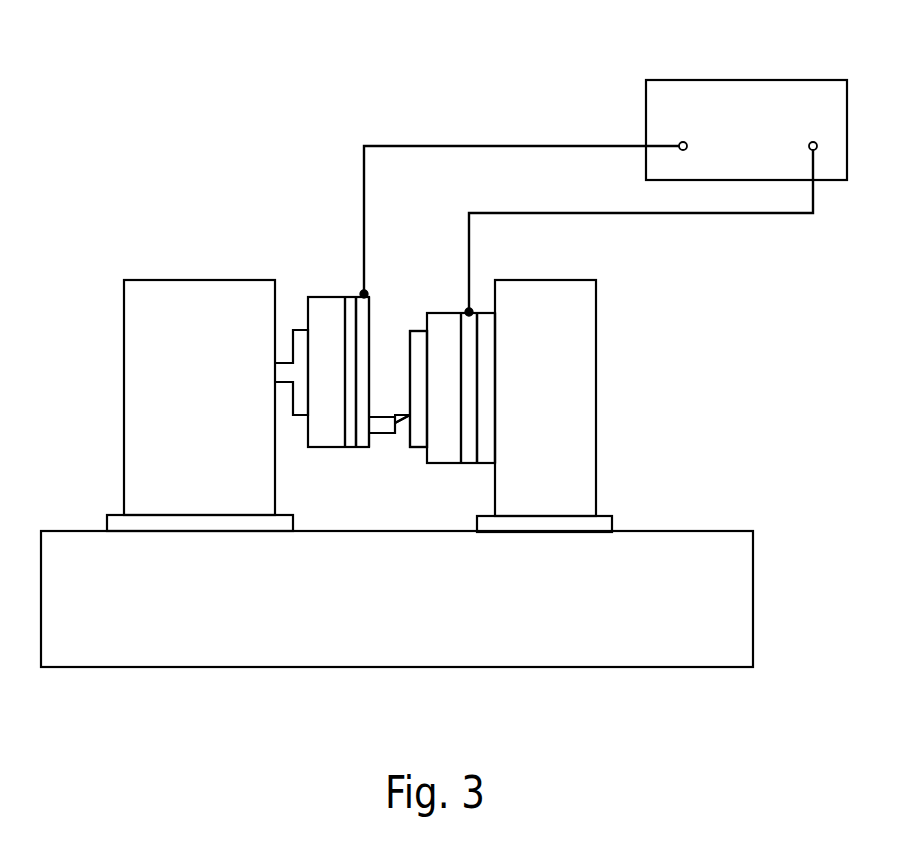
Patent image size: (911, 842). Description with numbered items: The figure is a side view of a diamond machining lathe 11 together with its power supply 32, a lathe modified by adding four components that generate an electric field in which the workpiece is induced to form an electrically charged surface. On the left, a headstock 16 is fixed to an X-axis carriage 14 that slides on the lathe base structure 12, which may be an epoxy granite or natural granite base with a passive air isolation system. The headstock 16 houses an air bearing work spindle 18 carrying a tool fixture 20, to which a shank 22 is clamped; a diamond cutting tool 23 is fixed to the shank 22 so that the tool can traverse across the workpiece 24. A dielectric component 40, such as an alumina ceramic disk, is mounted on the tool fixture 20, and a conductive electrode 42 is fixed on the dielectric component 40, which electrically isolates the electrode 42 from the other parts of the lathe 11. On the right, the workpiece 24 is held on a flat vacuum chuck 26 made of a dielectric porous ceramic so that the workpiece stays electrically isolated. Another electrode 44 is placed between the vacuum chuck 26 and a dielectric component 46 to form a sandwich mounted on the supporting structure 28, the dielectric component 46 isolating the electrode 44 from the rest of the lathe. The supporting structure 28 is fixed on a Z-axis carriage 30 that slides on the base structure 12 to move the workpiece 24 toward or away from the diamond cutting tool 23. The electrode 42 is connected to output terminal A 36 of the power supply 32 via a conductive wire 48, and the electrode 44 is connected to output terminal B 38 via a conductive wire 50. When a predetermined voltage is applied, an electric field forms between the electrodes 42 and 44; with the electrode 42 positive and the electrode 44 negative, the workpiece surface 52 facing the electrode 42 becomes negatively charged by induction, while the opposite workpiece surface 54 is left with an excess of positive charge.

The diamond machining lathe 11 is at (112, 241).
The lathe base structure 12 is at (92, 632).
The X-axis carriage 14 is at (133, 523).
The headstock 16 is at (159, 382).
The air bearing work spindle 18 is at (302, 343).
The tool fixture 20 is at (325, 313).
The shank 22 is at (382, 427).
The diamond cutting tool 23 is at (400, 423).
The workpiece 24 is at (418, 435).
The vacuum chuck 26 is at (446, 327).
The supporting structure 28 is at (573, 462).
The Z-axis carriage 30 is at (592, 523).
The power supply 32 is at (670, 95).
The output terminal A 36 is at (683, 141).
The output terminal B 38 is at (813, 141).
The dielectric component 40 is at (350, 310).
The electrode 42 is at (358, 313).
The electrode 44 is at (470, 452).
The dielectric component 46 is at (487, 323).
The conductive wire 48 is at (462, 143).
The conductive wire 50 is at (745, 213).
The workpiece surface 52 is at (410, 347).
The opposite workpiece surface 54 is at (410, 370).